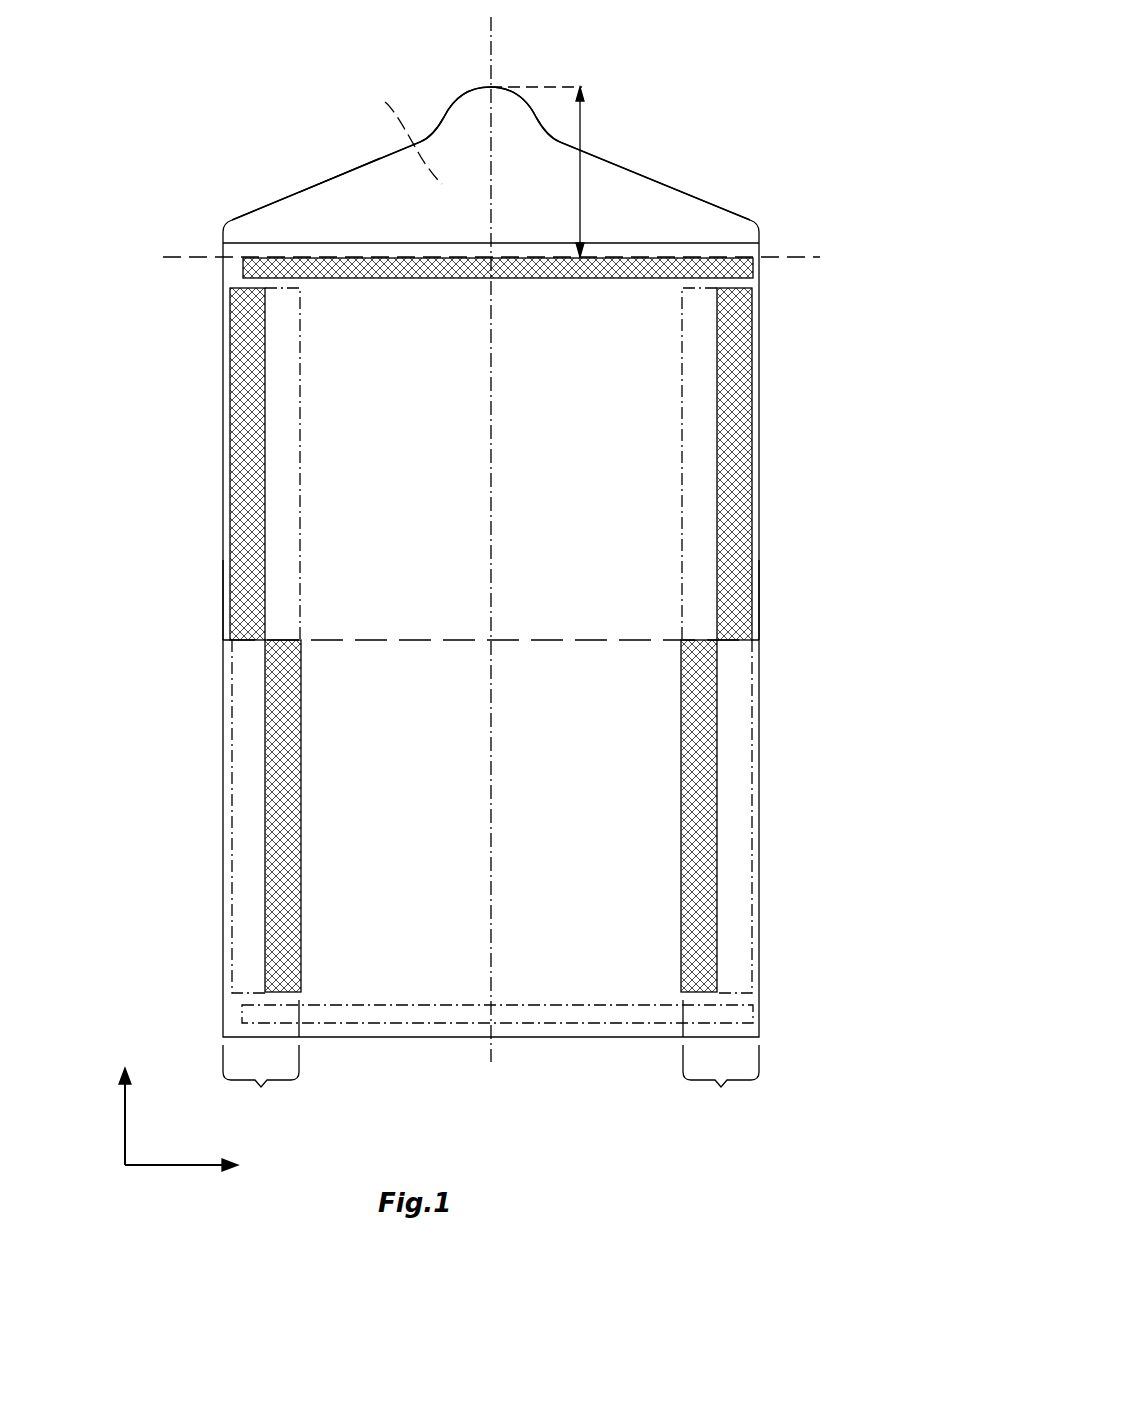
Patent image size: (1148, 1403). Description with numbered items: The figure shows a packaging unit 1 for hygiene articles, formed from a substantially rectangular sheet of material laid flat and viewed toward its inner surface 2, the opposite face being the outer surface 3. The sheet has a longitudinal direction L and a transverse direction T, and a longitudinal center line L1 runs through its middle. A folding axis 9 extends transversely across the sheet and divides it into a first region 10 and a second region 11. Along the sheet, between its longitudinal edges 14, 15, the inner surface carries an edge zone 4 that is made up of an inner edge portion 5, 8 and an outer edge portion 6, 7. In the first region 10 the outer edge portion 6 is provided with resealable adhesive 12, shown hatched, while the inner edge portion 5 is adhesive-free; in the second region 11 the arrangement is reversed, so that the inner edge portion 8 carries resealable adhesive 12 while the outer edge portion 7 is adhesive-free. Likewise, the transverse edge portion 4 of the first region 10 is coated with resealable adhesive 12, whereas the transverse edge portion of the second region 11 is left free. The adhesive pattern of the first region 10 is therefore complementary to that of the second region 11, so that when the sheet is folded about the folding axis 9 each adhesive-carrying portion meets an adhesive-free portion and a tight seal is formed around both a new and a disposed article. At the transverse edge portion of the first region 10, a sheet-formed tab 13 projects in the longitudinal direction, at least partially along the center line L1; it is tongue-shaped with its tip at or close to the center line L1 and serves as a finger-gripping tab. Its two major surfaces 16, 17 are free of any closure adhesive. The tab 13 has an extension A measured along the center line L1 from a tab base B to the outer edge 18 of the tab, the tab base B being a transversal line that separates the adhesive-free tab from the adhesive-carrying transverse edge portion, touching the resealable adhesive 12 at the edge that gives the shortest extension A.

The packaging unit 1 is at (880, 272).
The inner surface 2 is at (543, 957).
The outer surface 3 is at (463, 962).
The edge zone 4 is at (608, 268).
The inner edge portion 5 is at (290, 412).
The outer edge portion 6 is at (248, 468).
The outer edge portion 7 is at (248, 896).
The inner edge portion 8 is at (283, 858).
The folding axis 9 is at (585, 639).
The first region 10 is at (447, 451).
The second region 11 is at (447, 821).
The resealable adhesive 12 is at (250, 268).
The sheet-formed tab 13 is at (284, 178).
The longitudinal edge 14 is at (222, 600).
The longitudinal edge 15 is at (760, 620).
The major surface 16 is at (397, 218).
The major surface 17 is at (399, 135).
The outer edge 18 is at (362, 166).
The extension A is at (583, 128).
The tab base B is at (790, 257).
The longitudinal center line L1 is at (493, 40).
The longitudinal direction L is at (114, 1101).
The transverse direction T is at (194, 1156).